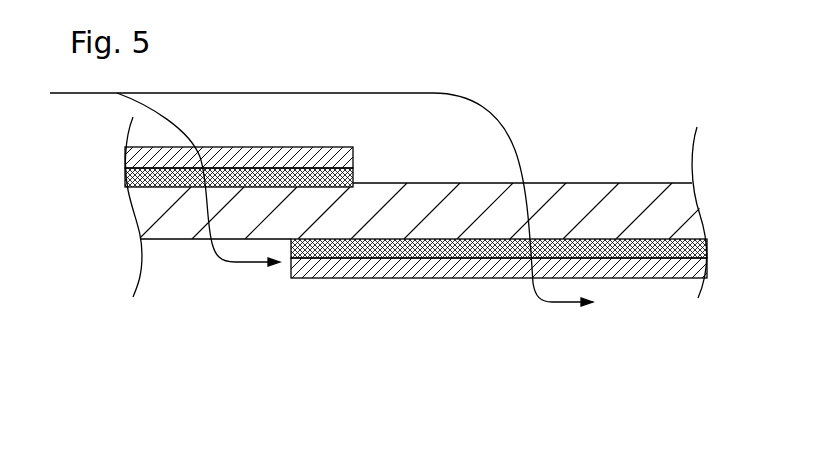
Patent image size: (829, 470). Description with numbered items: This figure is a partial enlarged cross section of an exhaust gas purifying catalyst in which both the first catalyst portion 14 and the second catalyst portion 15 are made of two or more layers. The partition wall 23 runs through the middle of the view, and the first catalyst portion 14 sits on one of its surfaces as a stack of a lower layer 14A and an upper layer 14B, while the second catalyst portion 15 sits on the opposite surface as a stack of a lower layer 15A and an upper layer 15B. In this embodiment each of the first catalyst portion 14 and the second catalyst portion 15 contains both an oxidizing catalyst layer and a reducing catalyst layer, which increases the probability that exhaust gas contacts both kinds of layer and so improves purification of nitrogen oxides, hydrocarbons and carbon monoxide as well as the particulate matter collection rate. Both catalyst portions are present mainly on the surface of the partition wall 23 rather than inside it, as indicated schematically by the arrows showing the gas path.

The first catalyst portion 14 is at (309, 150).
The lower layer 14A is at (348, 176).
The upper layer 14B is at (353, 150).
The second catalyst portion 15 is at (499, 339).
The lower layer 15A is at (618, 252).
The upper layer 15B is at (680, 263).
The partition wall 23 is at (612, 198).